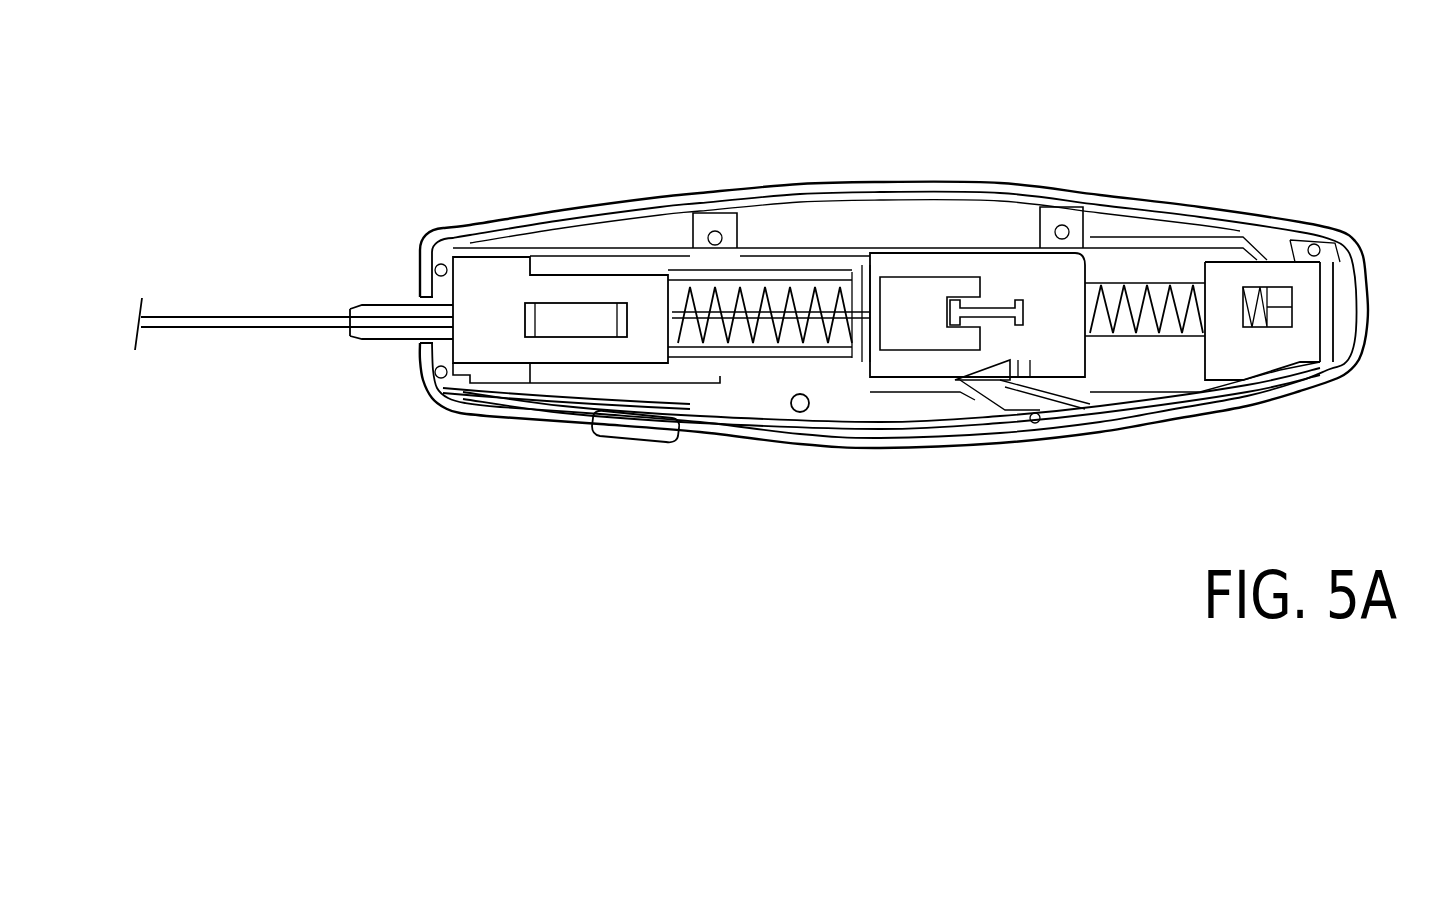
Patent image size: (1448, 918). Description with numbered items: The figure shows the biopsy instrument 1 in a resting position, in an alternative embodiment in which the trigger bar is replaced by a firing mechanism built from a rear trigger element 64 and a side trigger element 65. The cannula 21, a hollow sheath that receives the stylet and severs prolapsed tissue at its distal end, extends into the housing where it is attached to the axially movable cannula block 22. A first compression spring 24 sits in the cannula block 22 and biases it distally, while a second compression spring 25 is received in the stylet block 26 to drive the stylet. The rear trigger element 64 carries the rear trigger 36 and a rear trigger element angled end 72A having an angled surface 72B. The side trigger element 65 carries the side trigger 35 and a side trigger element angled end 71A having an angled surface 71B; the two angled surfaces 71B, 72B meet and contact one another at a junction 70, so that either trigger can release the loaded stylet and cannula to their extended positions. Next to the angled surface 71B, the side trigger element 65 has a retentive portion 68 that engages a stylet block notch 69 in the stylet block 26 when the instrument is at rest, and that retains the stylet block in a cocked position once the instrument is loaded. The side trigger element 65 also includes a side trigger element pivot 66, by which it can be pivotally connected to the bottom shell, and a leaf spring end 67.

The biopsy instrument 1 is at (698, 112).
The cannula 21 is at (247, 307).
The cannula block 22 is at (488, 300).
The first compression spring 24 is at (815, 295).
The second compression spring 25 is at (1141, 285).
The stylet block 26 is at (977, 262).
The side trigger 35 is at (641, 428).
The rear trigger 36 is at (1374, 306).
The rear trigger element 64 is at (1263, 365).
The side trigger element 65 is at (852, 402).
The side trigger element pivot 66 is at (796, 412).
The leaf spring end 67 is at (571, 403).
The retentive portion 68 is at (987, 378).
The stylet block notch 69 is at (995, 380).
The junction 70 is at (1003, 418).
The side trigger element angled end 71A is at (897, 400).
The angled surface 71B is at (993, 402).
The rear trigger element angled end 72A is at (1083, 402).
The angled surface 72B is at (1030, 422).